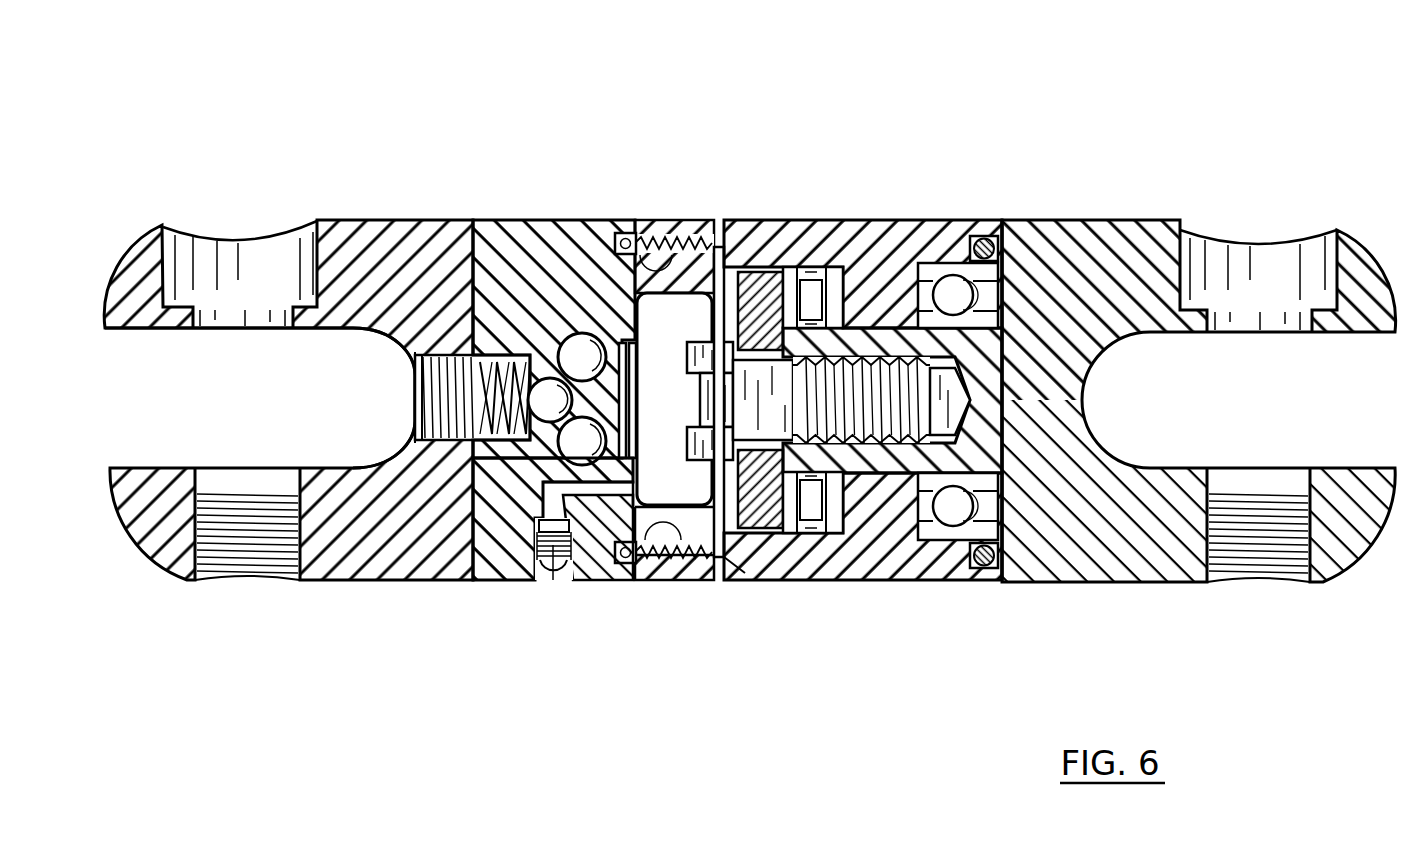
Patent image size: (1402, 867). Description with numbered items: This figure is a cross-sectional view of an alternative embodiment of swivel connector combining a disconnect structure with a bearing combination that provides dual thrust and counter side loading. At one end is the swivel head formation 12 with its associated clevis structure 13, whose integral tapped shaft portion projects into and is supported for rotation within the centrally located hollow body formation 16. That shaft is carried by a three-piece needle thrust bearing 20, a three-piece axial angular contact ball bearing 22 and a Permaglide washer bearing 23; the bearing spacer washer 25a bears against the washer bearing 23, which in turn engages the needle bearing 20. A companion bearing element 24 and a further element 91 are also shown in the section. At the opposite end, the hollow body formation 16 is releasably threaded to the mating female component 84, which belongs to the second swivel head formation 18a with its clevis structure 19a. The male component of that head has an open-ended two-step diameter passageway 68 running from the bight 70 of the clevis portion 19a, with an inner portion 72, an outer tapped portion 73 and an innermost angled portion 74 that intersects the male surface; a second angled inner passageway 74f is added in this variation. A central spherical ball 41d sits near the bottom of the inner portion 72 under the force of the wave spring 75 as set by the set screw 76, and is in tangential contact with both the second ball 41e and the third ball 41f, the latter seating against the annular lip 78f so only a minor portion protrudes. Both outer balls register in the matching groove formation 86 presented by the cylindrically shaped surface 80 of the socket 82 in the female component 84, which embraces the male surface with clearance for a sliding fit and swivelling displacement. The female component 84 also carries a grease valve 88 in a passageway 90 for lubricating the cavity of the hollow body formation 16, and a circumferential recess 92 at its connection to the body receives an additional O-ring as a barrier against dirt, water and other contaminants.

The swivel head formation 12 is at (1106, 186).
The clevis structure 13 is at (1362, 567).
The hollow body formation 16 is at (915, 582).
The swivel head formation 18a is at (318, 196).
The clevis structure 19a is at (155, 563).
The needle thrust bearing 20 is at (833, 500).
The axial angular contact ball bearing 22 is at (933, 275).
The washer bearing 23 is at (780, 273).
The roller bearing 24 is at (879, 333).
The bearing spacer washer 25a is at (750, 513).
The spherical ball 41d is at (547, 393).
The spherical ball 41e is at (505, 462).
The spherical ball 41f is at (576, 335).
The passageway 68 is at (400, 397).
The bight 70 is at (382, 330).
The inner portion 72 is at (500, 340).
The tapped portion 73 is at (447, 350).
The angled portion 74 is at (636, 433).
The angled inner passageway 74f is at (636, 395).
The wave spring 75 is at (510, 398).
The set screw 76 is at (417, 417).
The annular lip 78f is at (628, 345).
The cylindrically shaped surface 80 is at (460, 572).
The socket 82 is at (636, 375).
The mating female component 84 is at (702, 533).
The groove formation 86 is at (583, 352).
The grease valve 88 is at (553, 545).
The passageway 90 is at (585, 565).
The lower spring 91 is at (692, 533).
The circumferential recess 92 is at (687, 250).